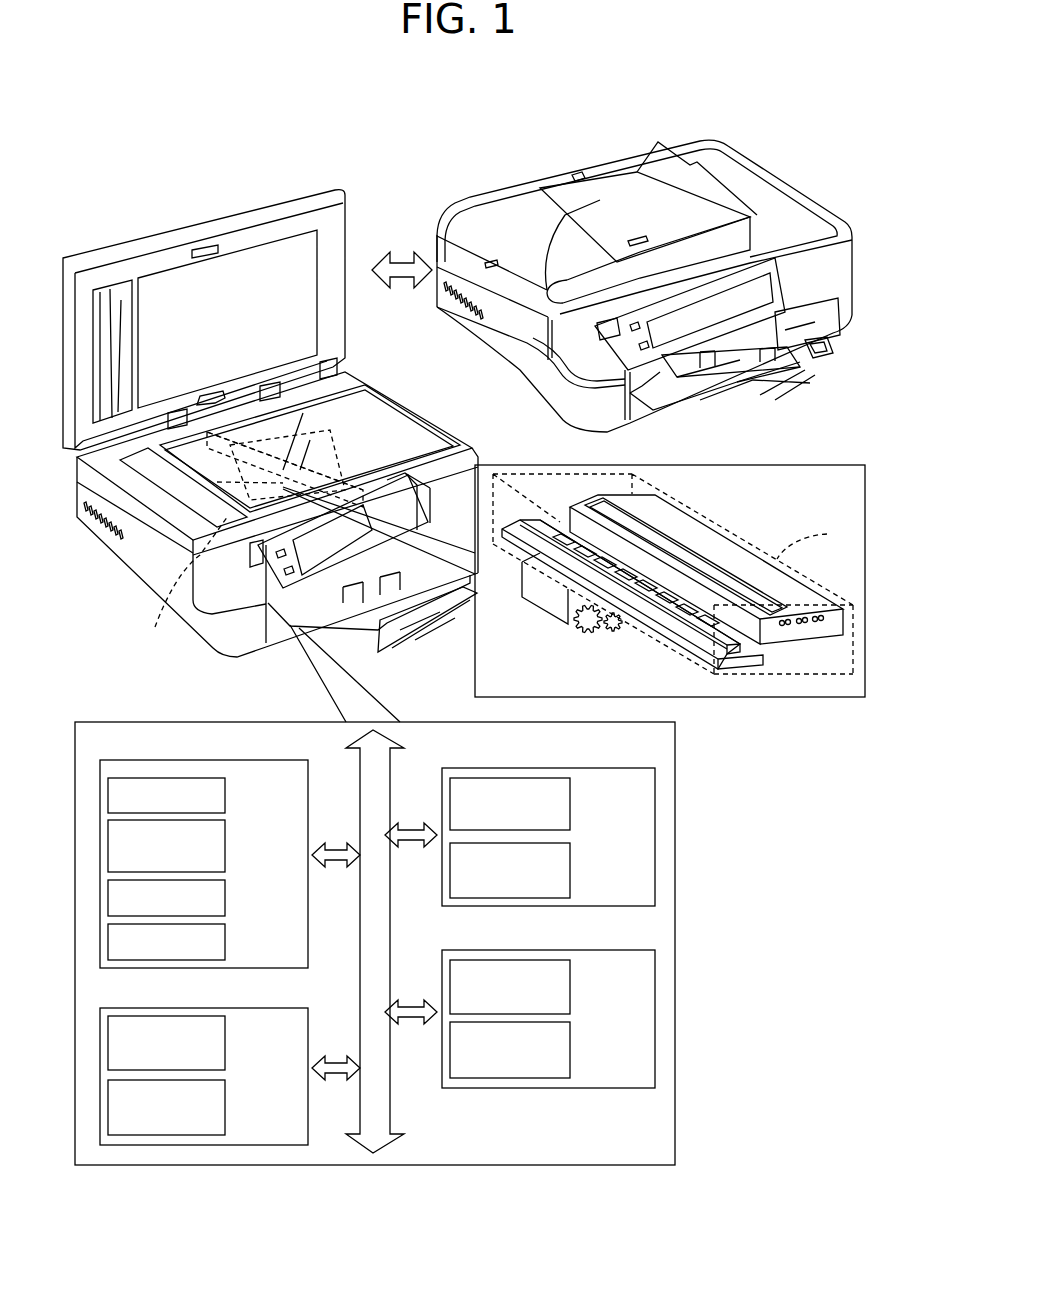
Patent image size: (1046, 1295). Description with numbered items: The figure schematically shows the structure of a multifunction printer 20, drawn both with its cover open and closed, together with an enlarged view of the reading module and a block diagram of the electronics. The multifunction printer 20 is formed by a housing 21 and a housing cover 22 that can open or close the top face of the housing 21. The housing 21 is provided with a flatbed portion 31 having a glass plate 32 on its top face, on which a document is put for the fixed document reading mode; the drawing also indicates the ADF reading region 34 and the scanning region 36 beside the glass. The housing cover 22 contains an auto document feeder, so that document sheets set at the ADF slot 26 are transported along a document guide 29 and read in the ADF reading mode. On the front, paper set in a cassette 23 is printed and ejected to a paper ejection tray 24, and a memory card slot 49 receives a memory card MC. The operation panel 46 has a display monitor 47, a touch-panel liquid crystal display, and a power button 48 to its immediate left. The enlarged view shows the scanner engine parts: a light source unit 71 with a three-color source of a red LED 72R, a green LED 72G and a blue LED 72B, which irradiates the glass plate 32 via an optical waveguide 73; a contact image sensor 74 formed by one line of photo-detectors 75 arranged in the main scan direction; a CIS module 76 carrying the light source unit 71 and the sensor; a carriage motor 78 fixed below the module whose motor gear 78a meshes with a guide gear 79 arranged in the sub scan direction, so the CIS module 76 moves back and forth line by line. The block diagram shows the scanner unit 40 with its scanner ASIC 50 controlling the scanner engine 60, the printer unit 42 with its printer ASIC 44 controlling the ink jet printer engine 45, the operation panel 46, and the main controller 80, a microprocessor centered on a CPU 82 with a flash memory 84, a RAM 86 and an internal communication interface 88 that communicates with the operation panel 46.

The multifunction printer 20 is at (170, 204).
The housing 21 is at (773, 202).
The housing cover 22 is at (300, 268).
The cassette 23 is at (661, 403).
The paper ejection tray 24 is at (723, 402).
The ADF slot 26 is at (577, 200).
The document guide 29 is at (640, 241).
The flatbed portion 31 is at (352, 347).
The glass plate 32 is at (335, 410).
The ADF reading region 34 is at (172, 488).
The scanning region 36 is at (387, 430).
The scanner unit 40 is at (610, 768).
The printer unit 42 is at (610, 950).
The printer ASIC 44 is at (571, 982).
The printer engine 45 is at (571, 1045).
The operation panel 46 is at (264, 1008).
The display monitor 47 is at (655, 338).
The power button 48 is at (605, 330).
The memory card slot 49 is at (832, 342).
The memory card MC is at (826, 352).
The scanner ASIC 50 is at (571, 798).
The scanner engine 60 is at (571, 863).
The light source unit 71 is at (730, 537).
The red LED 72R is at (785, 626).
The green LED 72G is at (802, 624).
The blue LED 72B is at (818, 622).
The optical waveguide 73 is at (662, 545).
The contact image sensor 74 is at (692, 649).
The photo-detectors 75 is at (693, 617).
The CIS module 76 is at (502, 583).
The carriage motor 78 is at (543, 594).
The motor gear 78a is at (577, 619).
The guide gear 79 is at (327, 430).
The main controller 80 is at (264, 762).
The CPU 82 is at (226, 800).
The flash memory 84 is at (226, 852).
The RAM 86 is at (226, 902).
The internal communication interface 88 is at (226, 946).